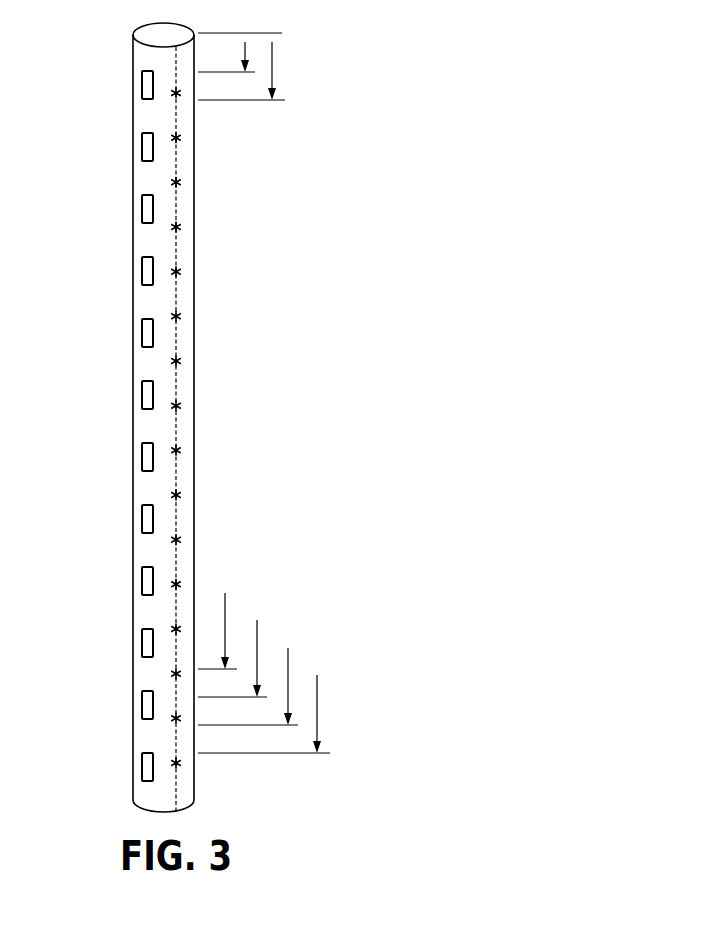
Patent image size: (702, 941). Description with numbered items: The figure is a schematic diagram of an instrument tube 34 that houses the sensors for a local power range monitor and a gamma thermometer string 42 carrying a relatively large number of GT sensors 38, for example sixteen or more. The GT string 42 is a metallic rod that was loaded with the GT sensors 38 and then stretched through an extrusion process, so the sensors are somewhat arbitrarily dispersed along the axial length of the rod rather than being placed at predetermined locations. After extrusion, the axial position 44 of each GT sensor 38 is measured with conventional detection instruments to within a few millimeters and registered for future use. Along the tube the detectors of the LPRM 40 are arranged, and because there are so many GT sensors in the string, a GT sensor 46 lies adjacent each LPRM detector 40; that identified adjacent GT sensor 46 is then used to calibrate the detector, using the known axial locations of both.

The instrument tube 34 is at (134, 738).
The GT sensor 38 is at (180, 95).
The LPRM detector 40 is at (141, 201).
The GT string 42 is at (182, 203).
The axial position 44 is at (278, 50).
The GT sensor adjacent LPRM detector 46 is at (180, 405).